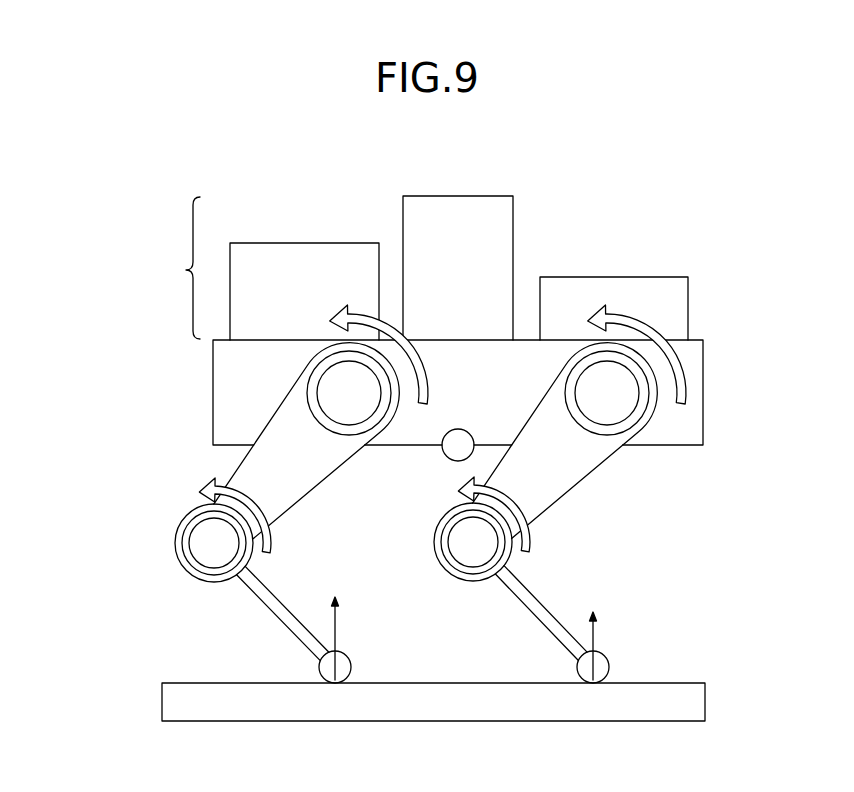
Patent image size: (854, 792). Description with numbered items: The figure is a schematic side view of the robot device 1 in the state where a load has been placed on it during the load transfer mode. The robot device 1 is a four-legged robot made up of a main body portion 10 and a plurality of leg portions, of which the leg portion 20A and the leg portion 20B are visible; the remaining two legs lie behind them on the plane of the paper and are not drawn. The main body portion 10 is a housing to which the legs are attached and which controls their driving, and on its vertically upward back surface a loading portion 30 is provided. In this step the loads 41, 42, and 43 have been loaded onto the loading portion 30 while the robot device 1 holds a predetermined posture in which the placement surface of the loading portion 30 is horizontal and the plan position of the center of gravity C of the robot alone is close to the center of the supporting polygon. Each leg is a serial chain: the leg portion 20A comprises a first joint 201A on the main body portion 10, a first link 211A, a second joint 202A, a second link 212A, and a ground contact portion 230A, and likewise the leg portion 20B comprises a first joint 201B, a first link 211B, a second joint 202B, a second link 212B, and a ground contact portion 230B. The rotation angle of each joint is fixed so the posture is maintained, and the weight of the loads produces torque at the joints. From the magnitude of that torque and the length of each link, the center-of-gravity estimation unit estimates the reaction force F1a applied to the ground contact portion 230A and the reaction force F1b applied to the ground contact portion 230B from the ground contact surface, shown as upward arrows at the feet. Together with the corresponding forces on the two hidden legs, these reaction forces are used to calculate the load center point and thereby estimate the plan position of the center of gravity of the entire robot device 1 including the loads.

The robot device 1 is at (435, 413).
The main body portion 10 is at (697, 373).
The loading portion 30 is at (420, 242).
The load 41 is at (331, 250).
The load 42 is at (472, 207).
The load 43 is at (631, 287).
The center of gravity C is at (450, 458).
The leg portion 20A is at (264, 494).
The leg portion 20B is at (608, 494).
The first joint 201A is at (358, 400).
The first joint 201B is at (627, 394).
The second joint 202A is at (200, 541).
The second joint 202B is at (470, 555).
The first link 211A is at (295, 483).
The first link 211B is at (542, 497).
The second link 212A is at (270, 592).
The second link 212B is at (553, 615).
The ground contact portion 230A is at (351, 667).
The ground contact portion 230B is at (609, 667).
The reaction force F1a is at (358, 638).
The reaction force F1b is at (616, 646).